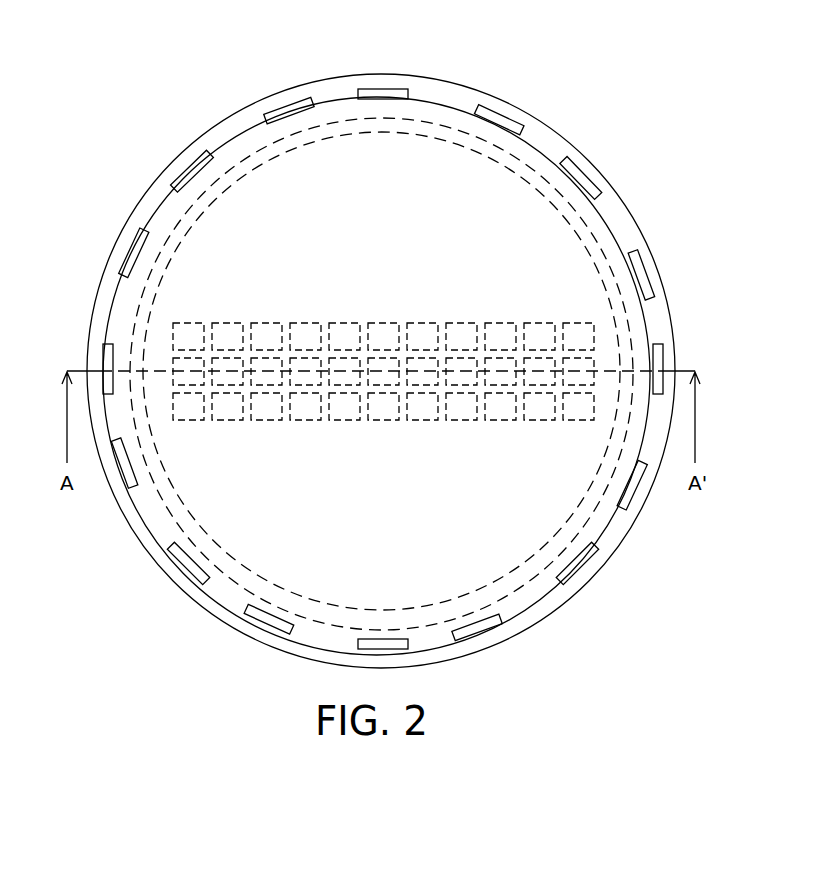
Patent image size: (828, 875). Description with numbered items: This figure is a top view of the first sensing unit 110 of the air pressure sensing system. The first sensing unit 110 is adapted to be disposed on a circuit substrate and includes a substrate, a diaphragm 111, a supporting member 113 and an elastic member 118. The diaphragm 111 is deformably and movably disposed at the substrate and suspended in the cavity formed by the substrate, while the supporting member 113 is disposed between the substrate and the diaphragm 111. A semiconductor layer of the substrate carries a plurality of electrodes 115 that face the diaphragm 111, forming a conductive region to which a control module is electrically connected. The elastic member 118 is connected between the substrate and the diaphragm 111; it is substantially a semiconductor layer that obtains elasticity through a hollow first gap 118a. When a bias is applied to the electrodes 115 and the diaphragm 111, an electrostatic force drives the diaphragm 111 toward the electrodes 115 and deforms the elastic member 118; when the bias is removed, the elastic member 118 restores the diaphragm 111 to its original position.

The first sensing unit 110 is at (108, 155).
The diaphragm 111 is at (345, 165).
The supporting member 113 is at (253, 160).
The electrodes 115 is at (310, 322).
The elastic member 118 is at (415, 372).
The first gap 118a is at (651, 278).